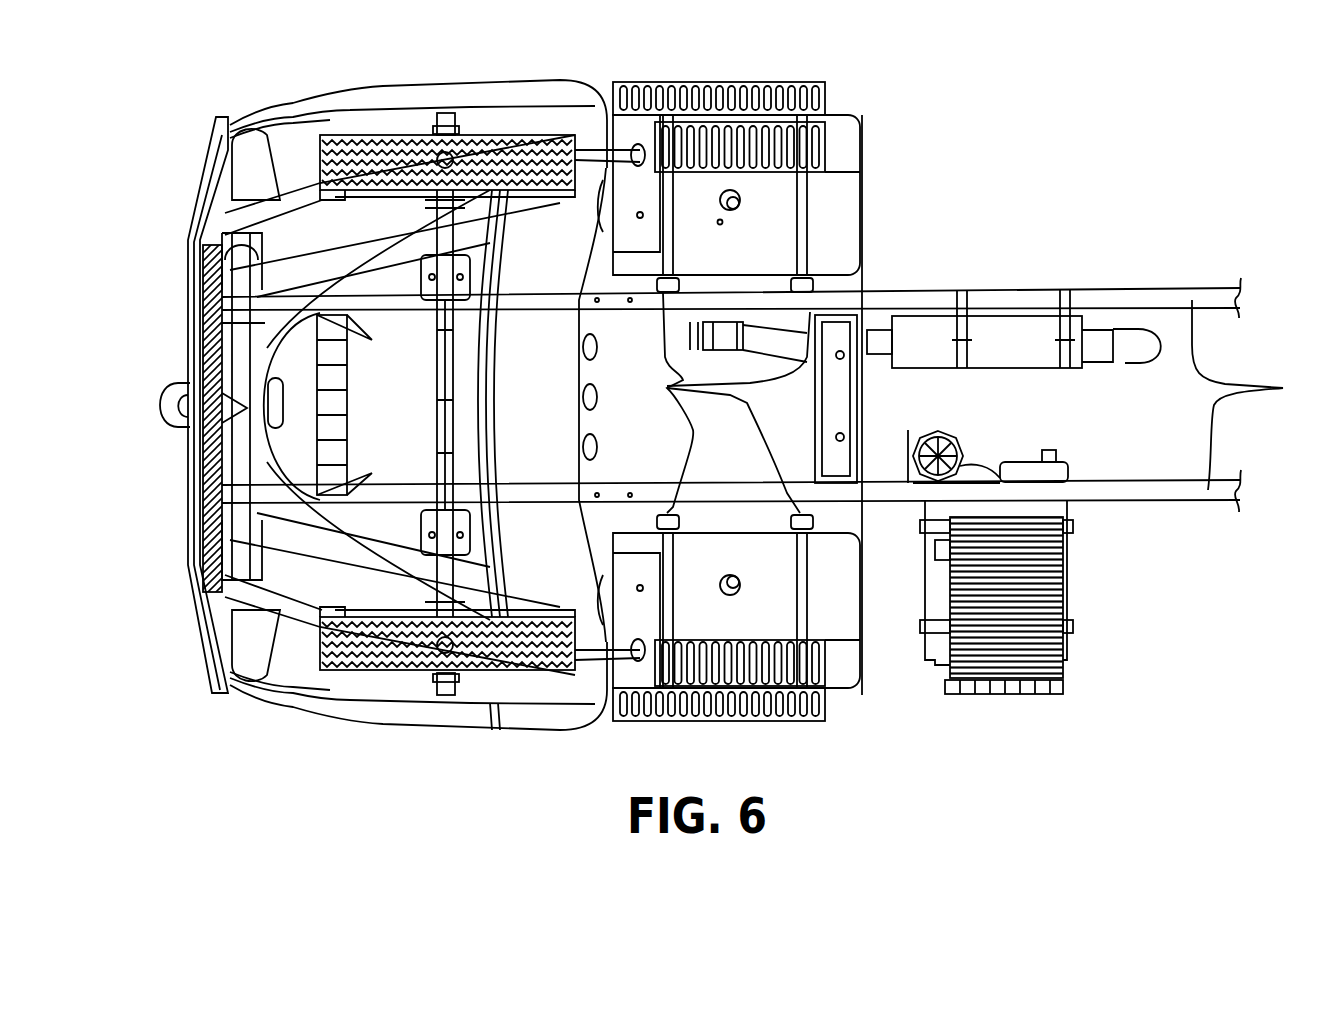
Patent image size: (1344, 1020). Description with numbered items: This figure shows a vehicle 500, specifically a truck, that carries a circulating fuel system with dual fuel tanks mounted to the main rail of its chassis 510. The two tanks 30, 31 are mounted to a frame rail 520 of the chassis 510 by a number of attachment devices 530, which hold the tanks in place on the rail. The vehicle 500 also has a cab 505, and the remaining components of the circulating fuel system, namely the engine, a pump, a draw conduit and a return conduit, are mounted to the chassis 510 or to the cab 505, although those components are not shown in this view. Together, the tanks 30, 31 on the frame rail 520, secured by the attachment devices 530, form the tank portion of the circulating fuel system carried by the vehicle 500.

The vehicle 500 is at (465, 750).
The cab 505 is at (323, 537).
The chassis 510 is at (383, 300).
The frame rail 520 is at (1283, 388).
The attachment devices 530 is at (668, 388).
The tank 30 is at (830, 215).
The tank 31 is at (833, 602).